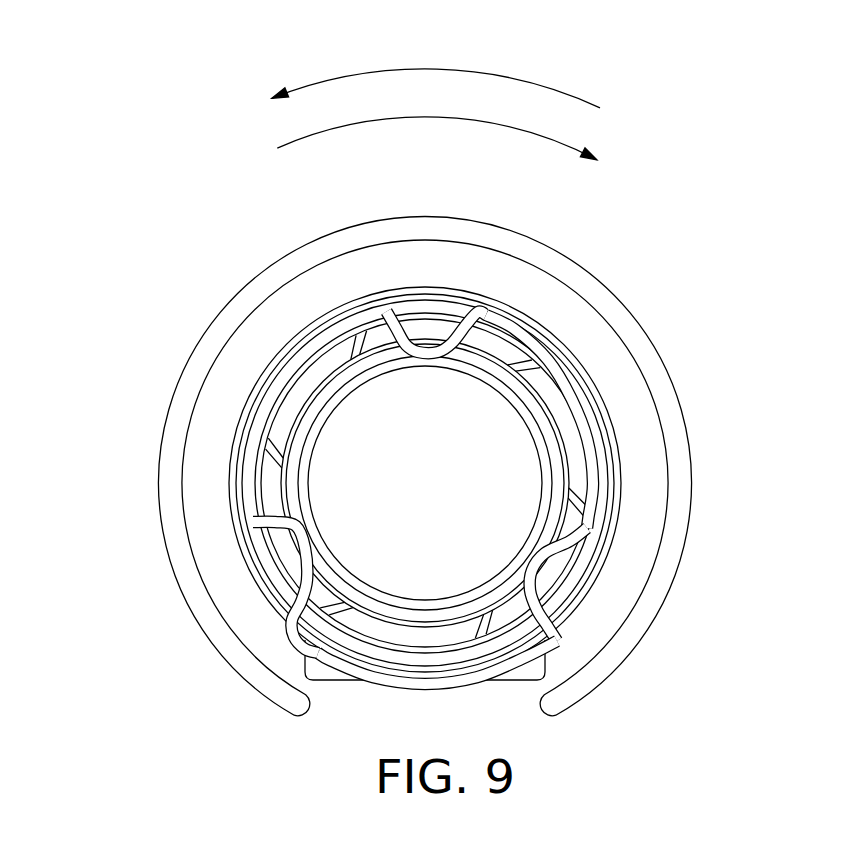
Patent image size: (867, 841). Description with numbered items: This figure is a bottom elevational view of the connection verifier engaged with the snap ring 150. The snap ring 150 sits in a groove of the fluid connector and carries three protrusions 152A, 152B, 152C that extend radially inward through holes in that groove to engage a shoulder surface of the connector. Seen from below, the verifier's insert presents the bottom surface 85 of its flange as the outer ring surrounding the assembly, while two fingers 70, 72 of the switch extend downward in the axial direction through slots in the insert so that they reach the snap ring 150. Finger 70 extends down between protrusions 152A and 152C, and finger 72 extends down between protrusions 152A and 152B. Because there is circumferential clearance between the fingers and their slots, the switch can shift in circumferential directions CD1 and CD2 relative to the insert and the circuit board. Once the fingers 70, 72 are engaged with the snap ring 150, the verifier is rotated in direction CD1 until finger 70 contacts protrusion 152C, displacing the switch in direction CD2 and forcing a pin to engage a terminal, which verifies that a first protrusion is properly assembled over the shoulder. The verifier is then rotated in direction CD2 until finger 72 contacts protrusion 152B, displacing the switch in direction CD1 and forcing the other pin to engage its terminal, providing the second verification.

The finger 70 is at (310, 414).
The finger 72 is at (540, 418).
The bottom surface 85 is at (172, 432).
The snap ring 150 is at (416, 423).
The protrusion 152A is at (434, 352).
The protrusion 152B is at (533, 557).
The protrusion 152C is at (303, 540).
The circumferential direction CD1 is at (357, 125).
The circumferential direction CD2 is at (430, 70).